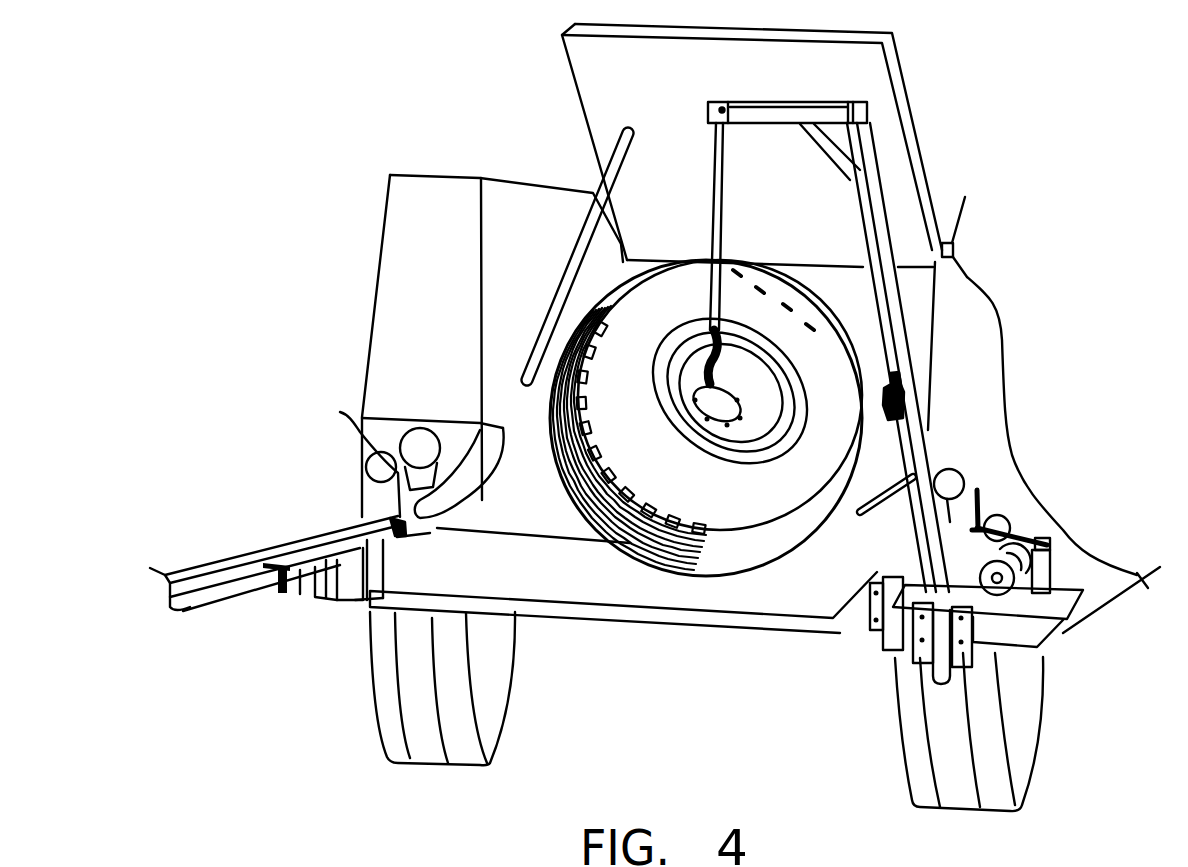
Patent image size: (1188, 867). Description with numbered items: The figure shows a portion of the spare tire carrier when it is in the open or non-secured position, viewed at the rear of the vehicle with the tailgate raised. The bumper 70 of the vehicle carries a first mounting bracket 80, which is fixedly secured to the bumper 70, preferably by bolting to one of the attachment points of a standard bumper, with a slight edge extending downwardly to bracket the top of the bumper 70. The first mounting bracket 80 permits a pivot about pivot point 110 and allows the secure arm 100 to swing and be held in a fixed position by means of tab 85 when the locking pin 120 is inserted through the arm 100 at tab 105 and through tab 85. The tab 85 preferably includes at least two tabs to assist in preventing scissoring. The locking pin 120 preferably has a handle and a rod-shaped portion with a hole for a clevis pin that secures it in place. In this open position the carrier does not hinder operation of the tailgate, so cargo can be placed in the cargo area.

The bumper 70 is at (313, 578).
The first mounting bracket 80 is at (353, 572).
The tab 85 is at (325, 575).
The secure arm 100 is at (207, 553).
The tab 105 is at (370, 572).
The pivot point 110 is at (373, 500).
The locking pin 120 is at (362, 433).